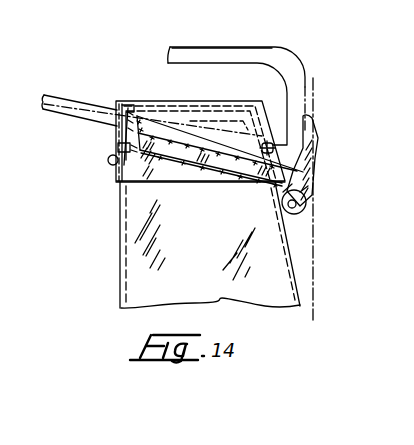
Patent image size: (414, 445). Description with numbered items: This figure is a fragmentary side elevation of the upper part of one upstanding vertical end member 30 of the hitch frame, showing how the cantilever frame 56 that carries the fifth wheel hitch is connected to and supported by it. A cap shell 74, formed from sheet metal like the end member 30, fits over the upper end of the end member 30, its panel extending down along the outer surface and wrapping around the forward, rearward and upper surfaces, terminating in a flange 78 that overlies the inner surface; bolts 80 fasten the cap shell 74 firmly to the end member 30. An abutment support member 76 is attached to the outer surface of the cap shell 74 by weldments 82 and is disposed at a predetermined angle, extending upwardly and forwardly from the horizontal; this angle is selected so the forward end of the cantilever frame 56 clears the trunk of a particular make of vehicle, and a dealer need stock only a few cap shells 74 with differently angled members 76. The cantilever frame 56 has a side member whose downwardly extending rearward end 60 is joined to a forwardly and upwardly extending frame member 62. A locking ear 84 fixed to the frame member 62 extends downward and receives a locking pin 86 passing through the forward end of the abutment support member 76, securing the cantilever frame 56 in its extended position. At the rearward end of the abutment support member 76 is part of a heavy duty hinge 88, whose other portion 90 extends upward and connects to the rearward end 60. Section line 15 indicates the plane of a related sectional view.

The section line 15- 15 is at (300, 90).
The upstanding vertical end member 30 is at (131, 280).
The cantilever frame 56 is at (226, 45).
The downwardly extending rearward end 60 is at (287, 51).
The frame member 62 is at (78, 100).
The cap shell 74 is at (174, 177).
The abutment support member 76 is at (113, 134).
The flange 78 is at (116, 187).
The bolt 80 is at (110, 165).
The weldment 82 is at (182, 142).
The locking ear 84 is at (131, 114).
The locking pin 86 is at (117, 146).
The heavy duty hinge 88 is at (302, 212).
The hinge portion 90 is at (316, 163).